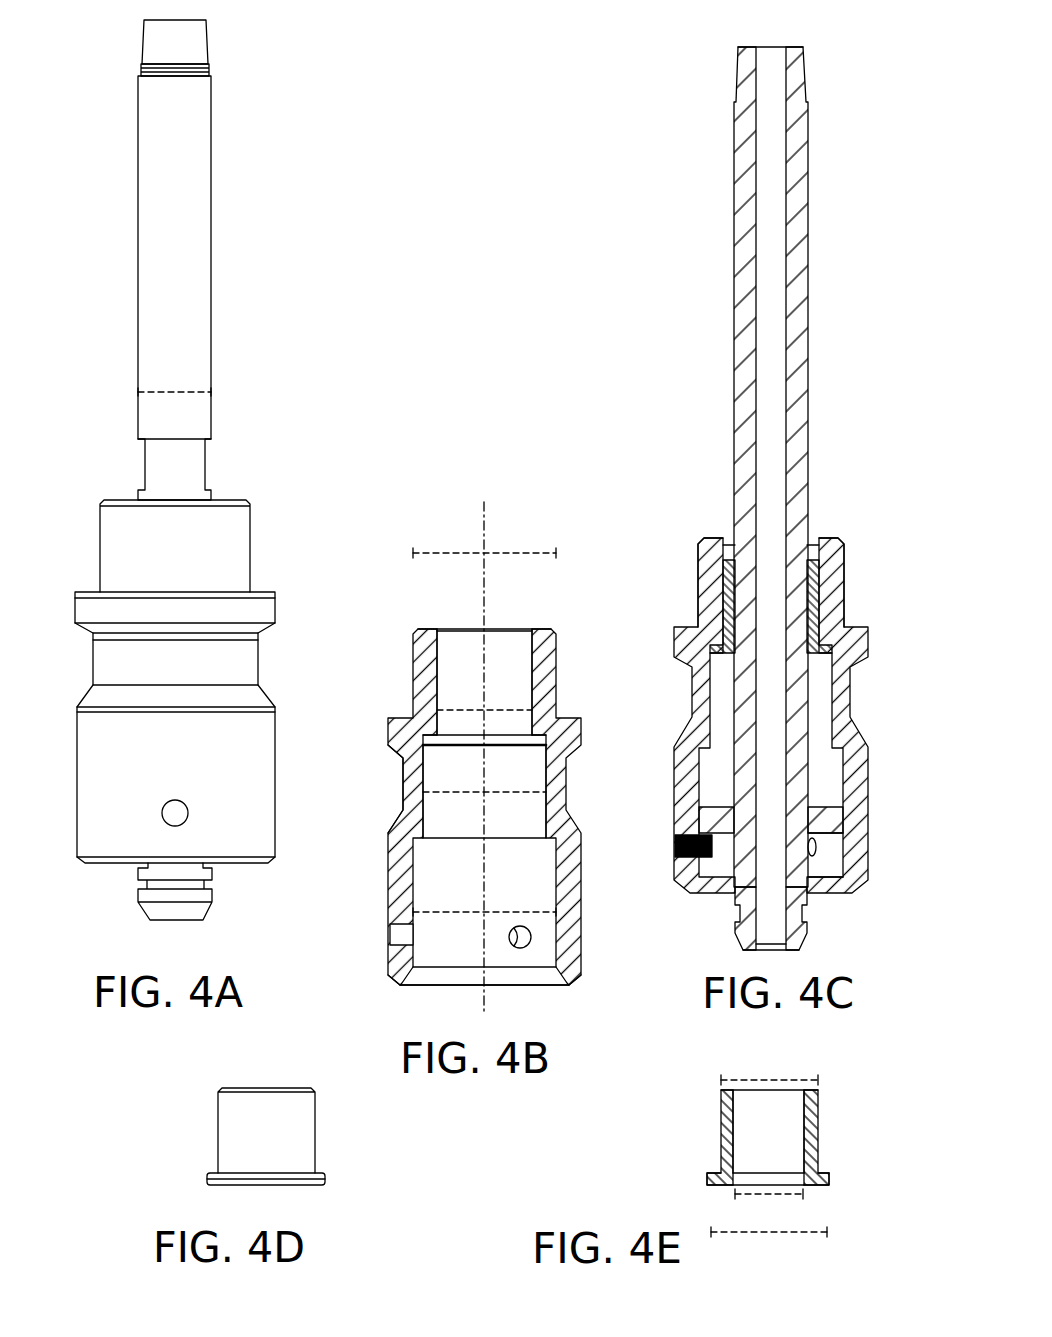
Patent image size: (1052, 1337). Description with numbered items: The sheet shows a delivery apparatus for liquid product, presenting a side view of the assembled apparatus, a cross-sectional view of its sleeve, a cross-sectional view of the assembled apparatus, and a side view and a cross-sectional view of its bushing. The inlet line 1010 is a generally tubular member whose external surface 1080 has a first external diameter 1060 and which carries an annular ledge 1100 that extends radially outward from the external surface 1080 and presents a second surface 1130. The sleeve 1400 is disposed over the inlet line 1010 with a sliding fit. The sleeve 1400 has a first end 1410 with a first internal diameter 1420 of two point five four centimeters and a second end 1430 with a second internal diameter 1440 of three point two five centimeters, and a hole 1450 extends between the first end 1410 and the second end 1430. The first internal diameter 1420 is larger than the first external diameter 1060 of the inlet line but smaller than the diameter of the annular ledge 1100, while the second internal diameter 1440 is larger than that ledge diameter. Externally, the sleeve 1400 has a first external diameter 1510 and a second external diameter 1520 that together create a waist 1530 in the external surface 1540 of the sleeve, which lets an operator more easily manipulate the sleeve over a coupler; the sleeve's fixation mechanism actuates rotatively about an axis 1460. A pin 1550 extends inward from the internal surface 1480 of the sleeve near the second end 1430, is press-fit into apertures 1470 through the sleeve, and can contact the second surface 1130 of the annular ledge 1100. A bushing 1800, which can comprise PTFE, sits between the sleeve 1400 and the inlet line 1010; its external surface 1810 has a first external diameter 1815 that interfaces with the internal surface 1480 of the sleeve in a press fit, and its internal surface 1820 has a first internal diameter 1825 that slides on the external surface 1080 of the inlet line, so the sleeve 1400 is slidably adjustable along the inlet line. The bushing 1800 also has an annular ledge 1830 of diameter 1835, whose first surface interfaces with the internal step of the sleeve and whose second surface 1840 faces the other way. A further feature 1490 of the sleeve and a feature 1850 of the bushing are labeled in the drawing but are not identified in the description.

In FIG. 4A, the inlet line 1010 is at (224, 260).
In FIG. 4C, the inlet line 1010 is at (770, 505).
In FIG. 4A, the external surface of the inlet line 1080 is at (184, 300).
In FIG. 4C, the external surface of the inlet line 1080 is at (813, 307).
In FIG. 4A, the first external diameter of the inlet line 1060 is at (158, 390).
In FIG. 4A, the sleeve 1400 is at (210, 690).
In FIG. 4B, the sleeve 1400 is at (463, 721).
In FIG. 4C, the sleeve 1400 is at (769, 718).
In FIG. 4A, the first end of the sleeve 1410 is at (147, 509).
In FIG. 4B, the first end of the sleeve 1410 is at (401, 620).
In FIG. 4C, the first end of the sleeve 1410 is at (681, 550).
In FIG. 4A, the external surface of the sleeve 1540 is at (181, 575).
In FIG. 4A, the apertures through the sleeve 1470 is at (181, 797).
In FIG. 4A, the second end of the sleeve 1430 is at (76, 887).
In FIG. 4B, the second end of the sleeve 1430 is at (386, 992).
In FIG. 4C, the second end of the sleeve 1430 is at (688, 906).
In FIG. 4B, the axis 1460 is at (487, 513).
In FIG. 4B, the first external diameter of the sleeve 1510 is at (524, 547).
In FIG. 4B, the hole of the sleeve 1450 is at (453, 627).
In FIG. 4B, the internal surface of the sleeve 1480 is at (514, 650).
In FIG. 4B, the first internal diameter of the sleeve 1420 is at (455, 695).
In FIG. 4B, the waist 1530 is at (396, 782).
In FIG. 4B, the second external diameter of the sleeve 1520 is at (458, 790).
In FIG. 4B, the shoulder 1490 is at (549, 743).
In FIG. 4B, the second internal diameter of the sleeve 1440 is at (522, 898).
In FIG. 4C, the bushing 1800 is at (816, 607).
In FIG. 4D, the bushing 1800 is at (240, 1112).
In FIG. 4E, the bushing 1800 is at (766, 1150).
In FIG. 4C, the annular ledge 1100 is at (844, 821).
In FIG. 4C, the second surface of the annular ledge 1130 is at (832, 846).
In FIG. 4C, the pin 1550 is at (668, 851).
In FIG. 4D, the external surface of the bushing 1810 is at (249, 1141).
In FIG. 4E, the first external diameter of the bushing 1815 is at (733, 1076).
In FIG. 4E, the internal surface of the bushing 1820 is at (780, 1125).
In FIG. 4E, the annular ledge of the bushing 1830 is at (701, 1175).
In FIG. 4E, the second surface of the bushing's annular ledge 1840 is at (823, 1172).
In FIG. 4E, the flange edge 1850 is at (821, 1191).
In FIG. 4E, the first internal diameter of the bushing 1825 is at (756, 1197).
In FIG. 4E, the diameter of the bushing's annular ledge 1835 is at (758, 1236).